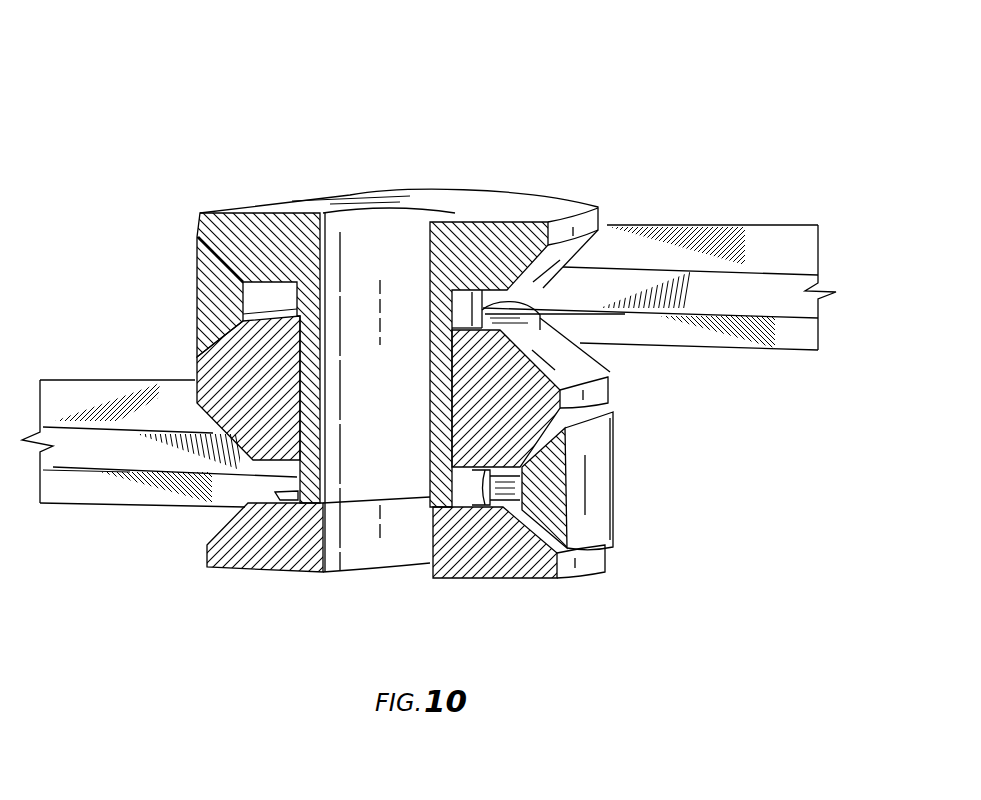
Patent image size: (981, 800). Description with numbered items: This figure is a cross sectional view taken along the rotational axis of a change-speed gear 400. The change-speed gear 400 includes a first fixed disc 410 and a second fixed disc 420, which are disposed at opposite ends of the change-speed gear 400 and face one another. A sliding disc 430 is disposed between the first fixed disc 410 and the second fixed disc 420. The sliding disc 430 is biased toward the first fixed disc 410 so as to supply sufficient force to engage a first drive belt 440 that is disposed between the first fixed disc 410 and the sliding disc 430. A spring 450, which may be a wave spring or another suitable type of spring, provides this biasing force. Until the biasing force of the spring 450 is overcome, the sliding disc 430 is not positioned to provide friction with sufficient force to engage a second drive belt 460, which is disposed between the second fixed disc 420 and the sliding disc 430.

The change-speed gear 400 is at (172, 58).
The first fixed disc 410 is at (550, 203).
The second fixed disc 420 is at (527, 572).
The sliding disc 430 is at (603, 386).
The first drive belt 440 is at (617, 305).
The spring 450 is at (483, 468).
The second drive belt 460 is at (88, 400).